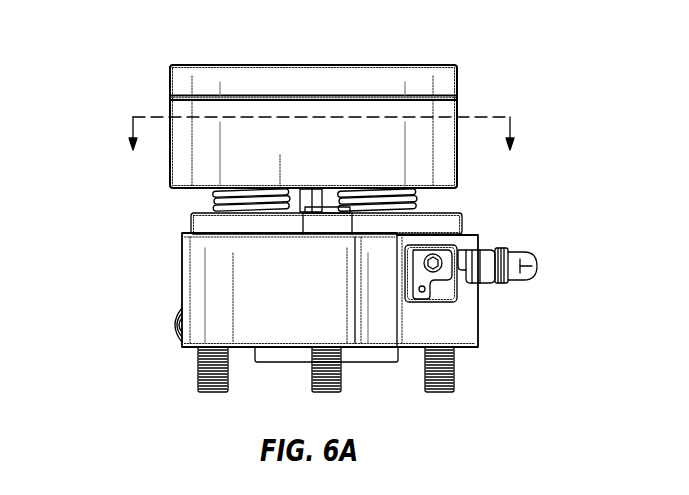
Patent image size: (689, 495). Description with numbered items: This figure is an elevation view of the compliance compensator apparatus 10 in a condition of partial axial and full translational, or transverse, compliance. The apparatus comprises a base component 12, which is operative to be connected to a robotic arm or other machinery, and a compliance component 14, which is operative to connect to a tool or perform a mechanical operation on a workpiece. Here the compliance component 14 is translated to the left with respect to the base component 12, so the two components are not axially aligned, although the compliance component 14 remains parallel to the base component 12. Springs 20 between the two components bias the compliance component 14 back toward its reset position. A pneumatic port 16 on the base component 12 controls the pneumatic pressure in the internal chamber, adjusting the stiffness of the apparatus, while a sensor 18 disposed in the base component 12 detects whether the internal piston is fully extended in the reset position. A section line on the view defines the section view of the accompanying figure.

The compliance compensator apparatus 10 is at (183, 36).
The base component 12 is at (159, 289).
The compliance component 14 is at (106, 143).
The pneumatic port 16 is at (172, 322).
The sensor 18 is at (490, 272).
The springs 20 is at (410, 202).